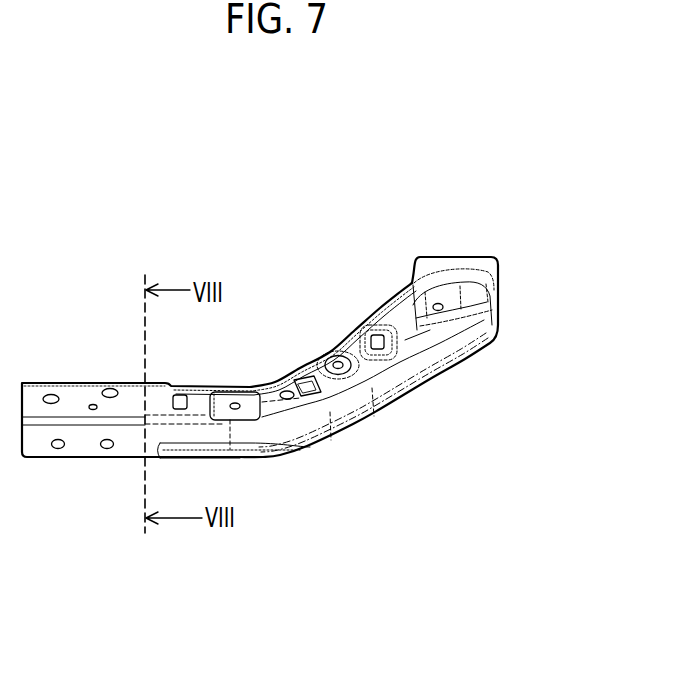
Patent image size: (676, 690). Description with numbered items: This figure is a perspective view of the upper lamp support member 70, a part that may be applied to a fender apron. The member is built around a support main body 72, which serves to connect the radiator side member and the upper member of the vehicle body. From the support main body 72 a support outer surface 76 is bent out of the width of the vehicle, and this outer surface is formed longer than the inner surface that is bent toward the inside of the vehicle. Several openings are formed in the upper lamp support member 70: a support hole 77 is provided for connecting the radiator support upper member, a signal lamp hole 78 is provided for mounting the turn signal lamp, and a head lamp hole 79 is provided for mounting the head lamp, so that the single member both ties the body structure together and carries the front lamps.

The upper lamp support member 70 is at (494, 371).
The support main body 72 is at (309, 380).
The support outer surface 76 is at (423, 368).
The support hole 77 is at (108, 440).
The signal lamp hole 78 is at (180, 394).
The head lamp hole 79 is at (433, 310).